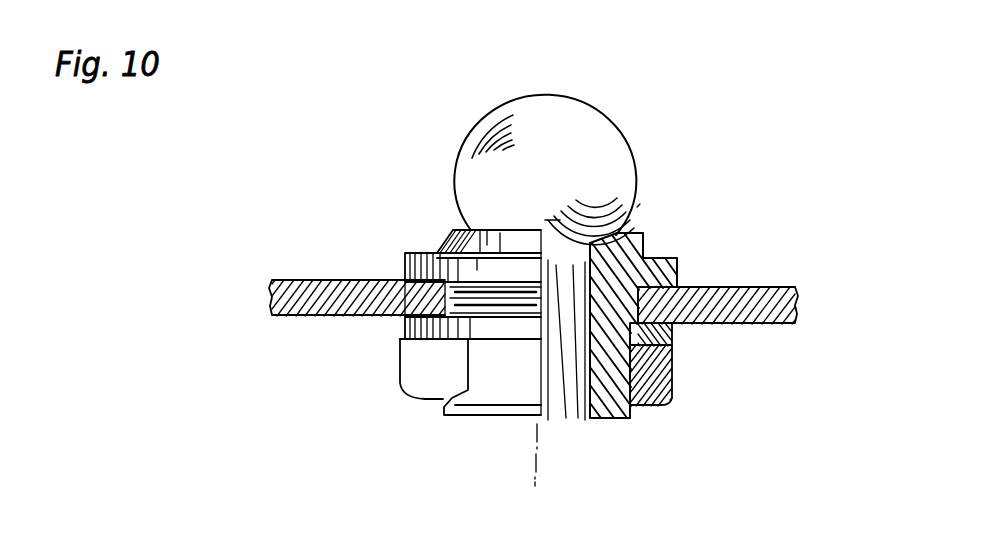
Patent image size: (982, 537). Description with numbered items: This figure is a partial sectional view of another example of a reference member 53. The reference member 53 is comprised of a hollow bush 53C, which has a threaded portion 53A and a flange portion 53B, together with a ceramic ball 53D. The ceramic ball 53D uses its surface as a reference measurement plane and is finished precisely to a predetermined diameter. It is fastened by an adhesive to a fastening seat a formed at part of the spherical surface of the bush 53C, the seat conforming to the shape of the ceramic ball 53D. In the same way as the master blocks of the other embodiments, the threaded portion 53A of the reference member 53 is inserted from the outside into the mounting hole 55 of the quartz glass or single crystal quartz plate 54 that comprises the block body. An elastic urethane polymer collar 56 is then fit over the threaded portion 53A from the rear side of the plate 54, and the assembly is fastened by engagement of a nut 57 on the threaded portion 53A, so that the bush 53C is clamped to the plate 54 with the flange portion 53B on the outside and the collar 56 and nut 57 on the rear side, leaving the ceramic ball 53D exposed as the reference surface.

The reference member 53 is at (674, 218).
The threaded portion 53A is at (672, 402).
The flange portion 53B is at (683, 267).
The hollow bush 53C is at (606, 428).
The ceramic ball 53D is at (592, 118).
The fastening seat a is at (637, 209).
The plate 54 is at (768, 293).
The mounting hole 55 is at (390, 280).
The elastic urethane polymer collar 56 is at (678, 335).
The nut 57 is at (678, 382).